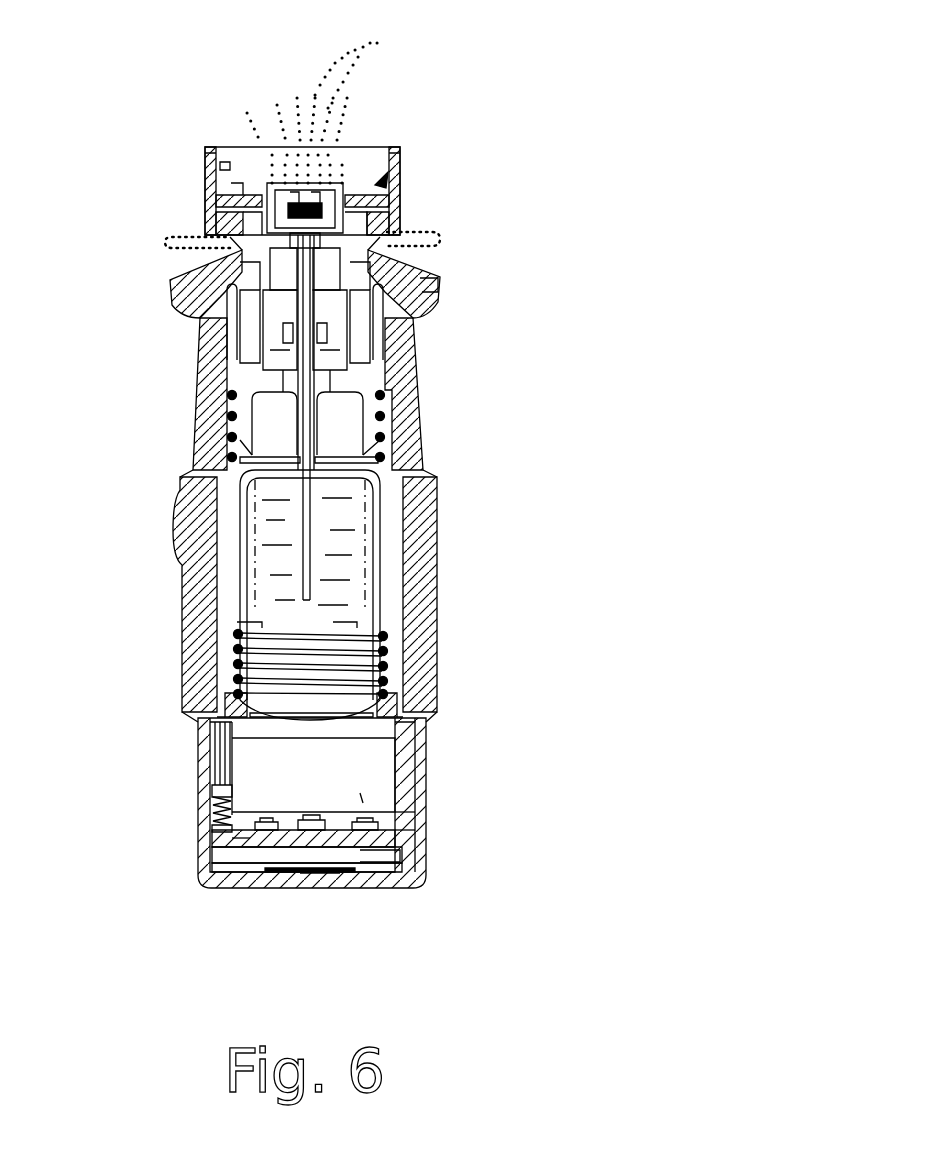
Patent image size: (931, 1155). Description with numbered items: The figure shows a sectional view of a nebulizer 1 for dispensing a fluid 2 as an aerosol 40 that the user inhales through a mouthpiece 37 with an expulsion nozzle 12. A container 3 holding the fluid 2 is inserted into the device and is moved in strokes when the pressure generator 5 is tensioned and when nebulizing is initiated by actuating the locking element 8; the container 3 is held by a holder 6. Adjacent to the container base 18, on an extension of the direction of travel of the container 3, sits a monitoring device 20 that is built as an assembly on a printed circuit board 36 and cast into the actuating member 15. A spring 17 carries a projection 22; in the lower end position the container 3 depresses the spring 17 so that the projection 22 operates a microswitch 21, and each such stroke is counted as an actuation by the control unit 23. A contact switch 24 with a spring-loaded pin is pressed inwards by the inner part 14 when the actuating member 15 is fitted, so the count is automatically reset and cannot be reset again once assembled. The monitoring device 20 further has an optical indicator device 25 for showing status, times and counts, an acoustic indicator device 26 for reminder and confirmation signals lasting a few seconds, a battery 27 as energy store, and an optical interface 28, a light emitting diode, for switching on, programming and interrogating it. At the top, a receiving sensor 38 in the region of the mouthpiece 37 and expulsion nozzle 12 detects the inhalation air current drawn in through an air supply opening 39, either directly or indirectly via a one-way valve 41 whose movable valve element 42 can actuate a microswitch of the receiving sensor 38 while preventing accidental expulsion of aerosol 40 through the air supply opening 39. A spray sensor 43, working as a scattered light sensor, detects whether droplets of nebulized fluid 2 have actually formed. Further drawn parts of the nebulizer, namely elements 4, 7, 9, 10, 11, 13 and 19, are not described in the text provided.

The nebulizer 1 is at (437, 128).
The fluid 2 is at (272, 513).
The container 3 is at (253, 565).
The piston rod 4 is at (257, 597).
The pressure generator 5 is at (330, 320).
The holder 6 is at (330, 408).
The piston seal 7 is at (413, 420).
The locking element 8 is at (398, 322).
The pump housing 9 is at (410, 293).
The valve body 10 is at (407, 258).
The shoulder 11 is at (200, 263).
The expulsion nozzle 12 is at (380, 163).
The upper housing 13 is at (200, 357).
The inner part 14 is at (210, 424).
The actuating member 15 is at (190, 690).
The spring 17 is at (200, 880).
The container base 18 is at (410, 748).
The cup 19 is at (312, 777).
The monitoring device 20 is at (395, 827).
The microswitch 21 is at (413, 838).
The projection 22 is at (305, 813).
The control unit 23 is at (305, 797).
The contact switch 24 is at (200, 812).
The optical indicator device 25 is at (422, 812).
The acoustic indicator device 26 is at (345, 857).
The battery 27 is at (375, 840).
The interface 28 is at (400, 880).
The printed circuit board 36 is at (292, 838).
The mouthpiece 37 is at (207, 150).
The receiving sensor 38 is at (212, 255).
The air supply opening 39 is at (213, 238).
The aerosol 40 is at (335, 100).
The valve 41 is at (243, 182).
The valve element 42 is at (345, 193).
The spray sensor 43 is at (207, 165).